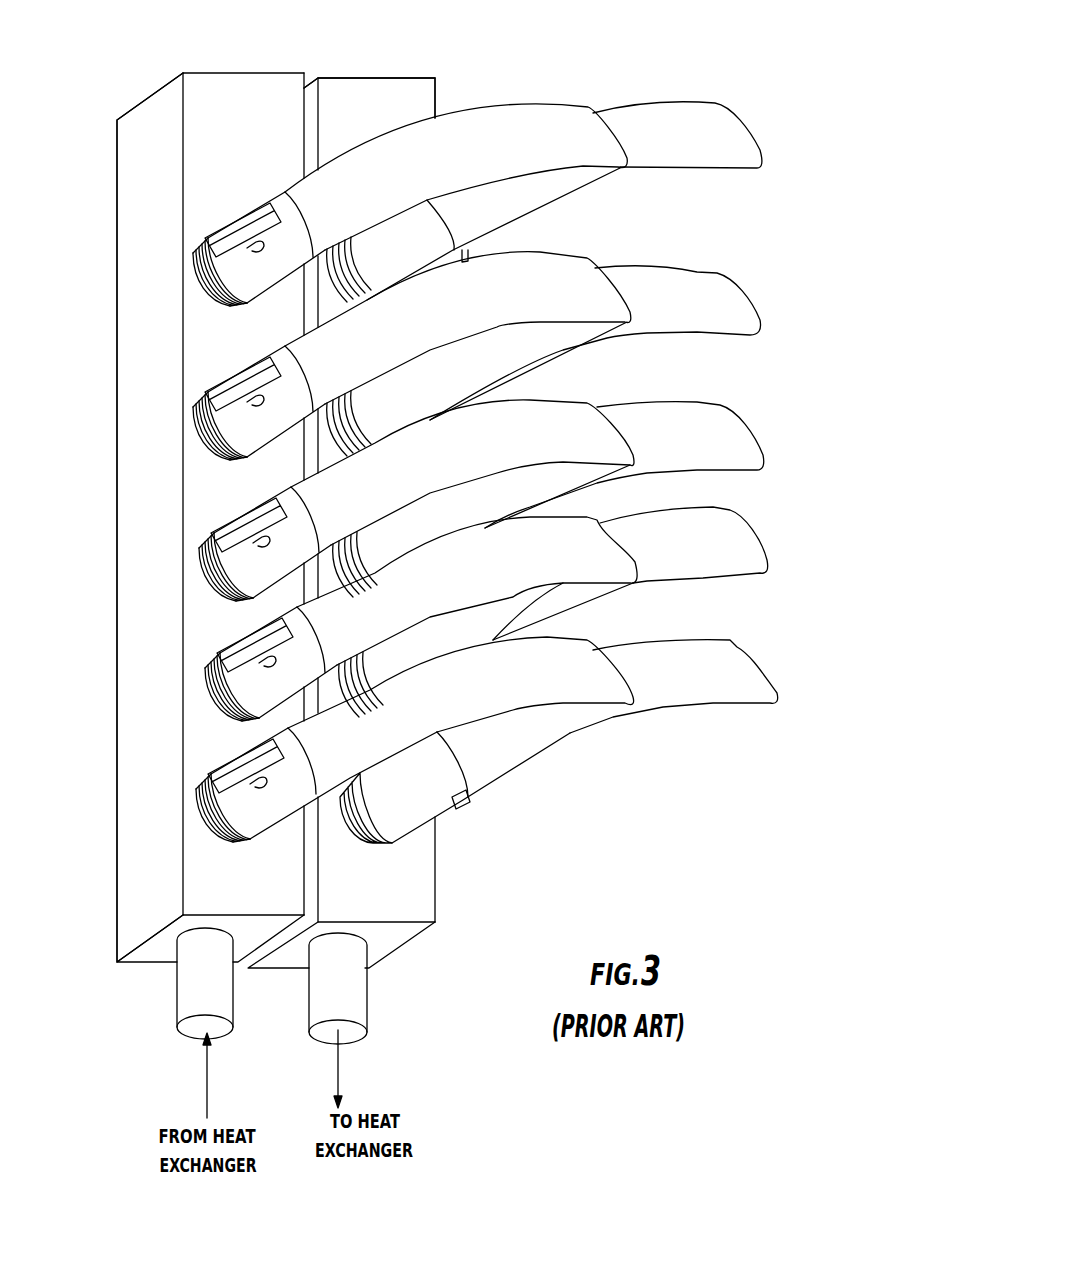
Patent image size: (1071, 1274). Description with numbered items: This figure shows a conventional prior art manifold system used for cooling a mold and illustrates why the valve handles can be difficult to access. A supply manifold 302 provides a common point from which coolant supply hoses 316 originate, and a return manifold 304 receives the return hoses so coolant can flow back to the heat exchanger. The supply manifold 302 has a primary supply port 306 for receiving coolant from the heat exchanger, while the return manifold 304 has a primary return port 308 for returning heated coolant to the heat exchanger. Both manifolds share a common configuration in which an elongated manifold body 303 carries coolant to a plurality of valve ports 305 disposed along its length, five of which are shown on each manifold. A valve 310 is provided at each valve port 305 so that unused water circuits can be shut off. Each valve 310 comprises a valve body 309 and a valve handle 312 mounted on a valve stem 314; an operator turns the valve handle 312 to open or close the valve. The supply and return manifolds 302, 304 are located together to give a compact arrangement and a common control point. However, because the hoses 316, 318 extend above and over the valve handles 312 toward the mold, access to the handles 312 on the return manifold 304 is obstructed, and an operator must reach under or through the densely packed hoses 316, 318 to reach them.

The supply manifold 302 is at (100, 470).
The elongated manifold body 303 is at (148, 275).
The return manifold 304 is at (367, 57).
The valve port 305 is at (200, 288).
The primary supply port 306 is at (178, 997).
The primary return port 308 is at (368, 996).
The valve body 309 is at (285, 192).
The valve 310 is at (297, 247).
The valve handle 312 is at (243, 224).
The valve stem 314 is at (255, 246).
The coolant supply hose 316 is at (560, 100).
The return hose 318 is at (693, 104).